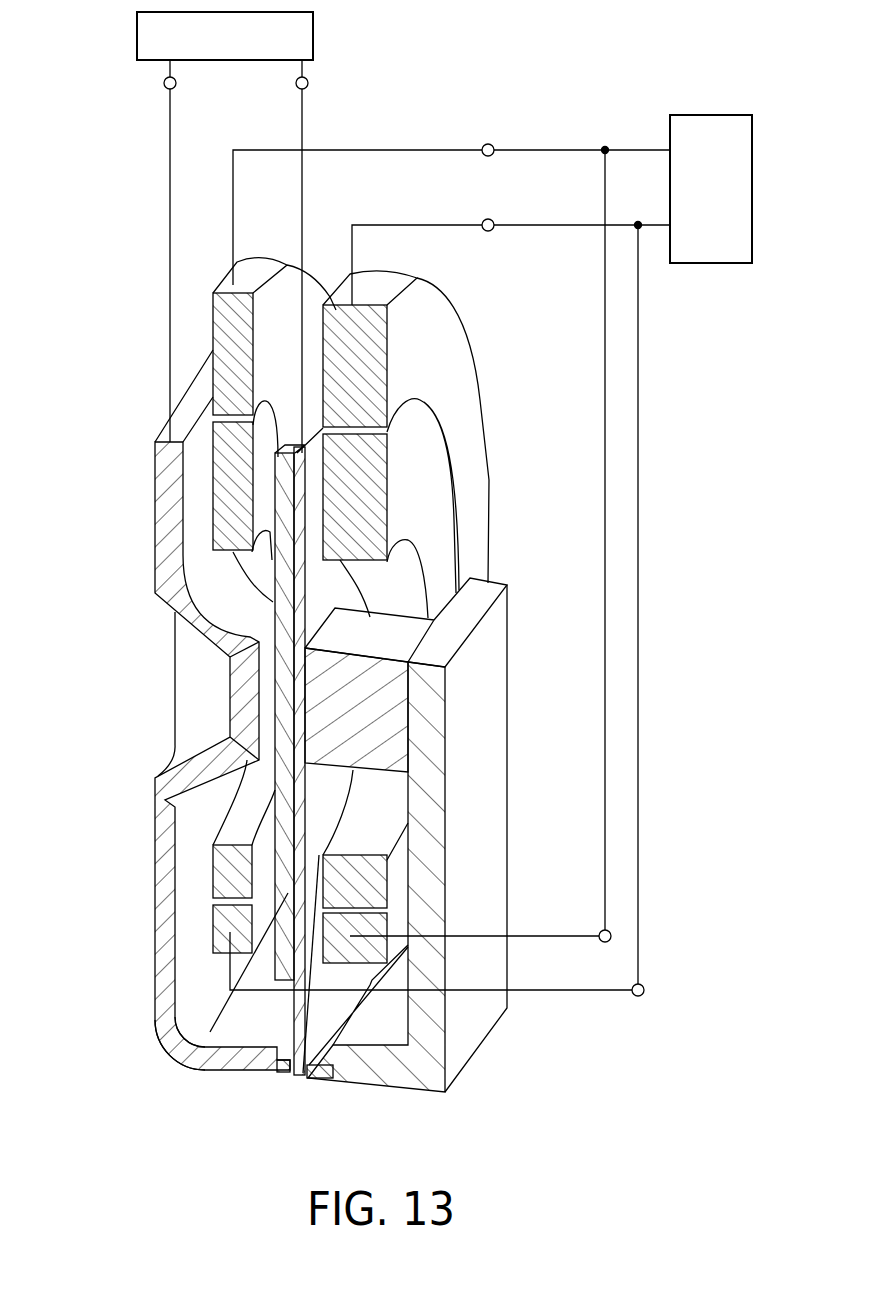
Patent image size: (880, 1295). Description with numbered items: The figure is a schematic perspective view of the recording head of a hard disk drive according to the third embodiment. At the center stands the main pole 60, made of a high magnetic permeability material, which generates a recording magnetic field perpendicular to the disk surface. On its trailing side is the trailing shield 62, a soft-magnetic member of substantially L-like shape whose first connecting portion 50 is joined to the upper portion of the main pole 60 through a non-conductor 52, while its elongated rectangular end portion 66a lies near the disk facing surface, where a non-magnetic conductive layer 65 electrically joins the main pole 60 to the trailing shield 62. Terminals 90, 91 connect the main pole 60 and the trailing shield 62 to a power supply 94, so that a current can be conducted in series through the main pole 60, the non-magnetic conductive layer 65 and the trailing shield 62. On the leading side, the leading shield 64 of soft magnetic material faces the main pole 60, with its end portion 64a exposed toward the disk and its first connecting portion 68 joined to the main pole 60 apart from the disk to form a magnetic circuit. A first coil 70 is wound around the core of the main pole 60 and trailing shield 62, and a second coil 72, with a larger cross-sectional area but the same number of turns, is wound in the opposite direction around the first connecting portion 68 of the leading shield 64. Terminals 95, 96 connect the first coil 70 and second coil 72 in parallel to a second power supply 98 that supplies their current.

The first connecting portion 50 is at (230, 698).
The non-conductor 52 is at (258, 663).
The main pole 60 is at (297, 997).
The trailing shield 62 is at (142, 858).
The leading shield 64 is at (500, 881).
The end portion 64a is at (385, 1080).
The non-magnetic conductive layer 65 is at (287, 1074).
The end portion 66a is at (203, 1054).
The first connecting portion 68 is at (400, 717).
The first coil 70 is at (213, 312).
The second coil 72 is at (470, 402).
The terminal 90 is at (308, 84).
The terminal 91 is at (164, 84).
The power supply 94 is at (137, 35).
The terminal 95 is at (488, 143).
The terminal 96 is at (488, 218).
The power supply 98 is at (715, 263).